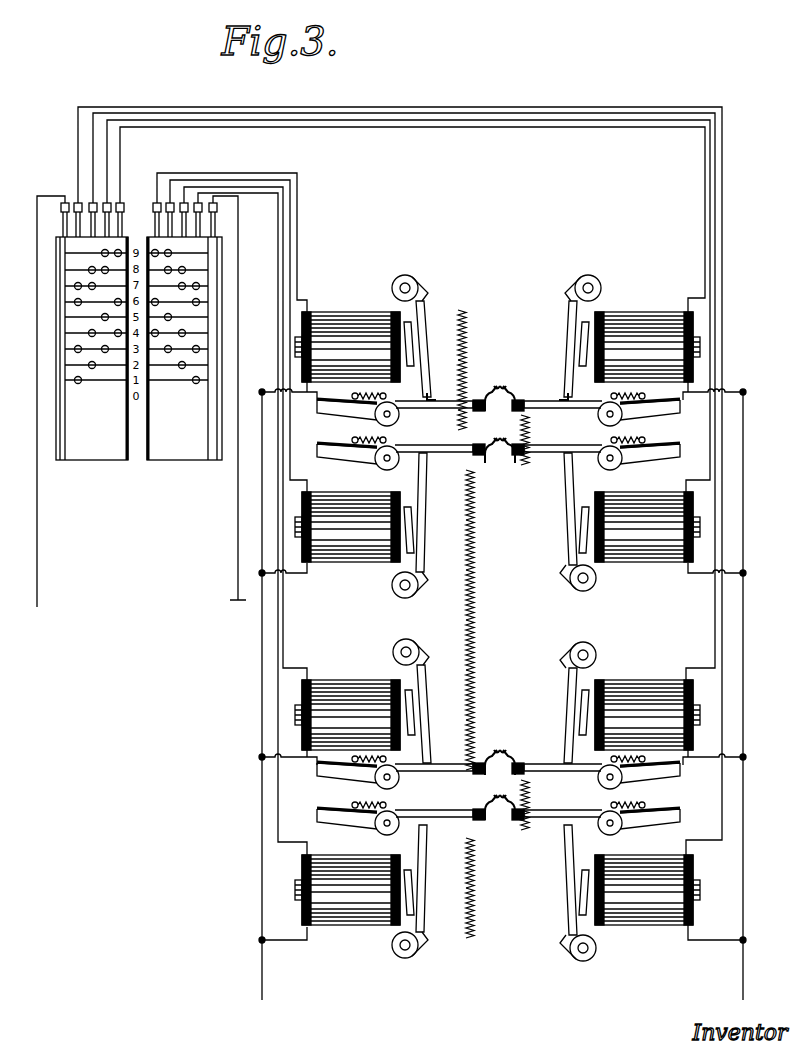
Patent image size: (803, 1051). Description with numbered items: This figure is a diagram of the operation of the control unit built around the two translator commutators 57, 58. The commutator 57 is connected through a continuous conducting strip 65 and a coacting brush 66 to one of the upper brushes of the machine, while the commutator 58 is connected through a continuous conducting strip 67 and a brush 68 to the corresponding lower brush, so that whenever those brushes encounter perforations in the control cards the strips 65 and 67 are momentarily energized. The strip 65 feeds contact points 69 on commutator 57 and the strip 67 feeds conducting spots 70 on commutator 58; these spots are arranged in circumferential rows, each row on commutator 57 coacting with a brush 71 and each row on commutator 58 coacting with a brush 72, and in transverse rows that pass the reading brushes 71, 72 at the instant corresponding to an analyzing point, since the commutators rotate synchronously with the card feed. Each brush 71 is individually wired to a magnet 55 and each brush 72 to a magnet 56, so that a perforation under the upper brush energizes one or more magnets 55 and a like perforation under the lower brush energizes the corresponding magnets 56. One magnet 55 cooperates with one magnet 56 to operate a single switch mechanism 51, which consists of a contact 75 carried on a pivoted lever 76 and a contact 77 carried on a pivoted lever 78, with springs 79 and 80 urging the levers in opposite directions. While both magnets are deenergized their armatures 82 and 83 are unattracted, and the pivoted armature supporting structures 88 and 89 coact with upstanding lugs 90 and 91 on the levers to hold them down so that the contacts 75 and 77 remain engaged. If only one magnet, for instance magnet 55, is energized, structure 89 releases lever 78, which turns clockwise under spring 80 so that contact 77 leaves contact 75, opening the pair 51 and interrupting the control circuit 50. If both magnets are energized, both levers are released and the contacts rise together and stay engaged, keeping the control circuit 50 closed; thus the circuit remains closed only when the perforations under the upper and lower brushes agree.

The control circuit 50 is at (468, 330).
The switch mechanism 51 is at (502, 388).
The magnet 55 is at (640, 320).
The magnet 56 is at (335, 325).
The commutator 57 is at (98, 455).
The commutator 58 is at (175, 458).
The continuous conducting strip 65 is at (63, 458).
The brush 66 is at (62, 212).
The continuous conducting strip 67 is at (210, 363).
The brush 68 is at (215, 219).
The contact points 69 is at (92, 369).
The conducting spots 70 is at (194, 384).
The brush 71 is at (91, 203).
The brush 72 is at (170, 203).
The contact 75 is at (487, 395).
The pivoted lever 76 is at (425, 402).
The contact 77 is at (512, 396).
The pivoted lever 78 is at (560, 402).
The spring 79 is at (362, 398).
The spring 80 is at (636, 397).
The armature 82 is at (415, 325).
The armature 83 is at (592, 312).
The pivoted armature supporting structure 88 is at (418, 354).
The pivoted armature supporting structure 89 is at (570, 320).
The upstanding lug 90 is at (428, 395).
The upstanding lug 91 is at (580, 397).